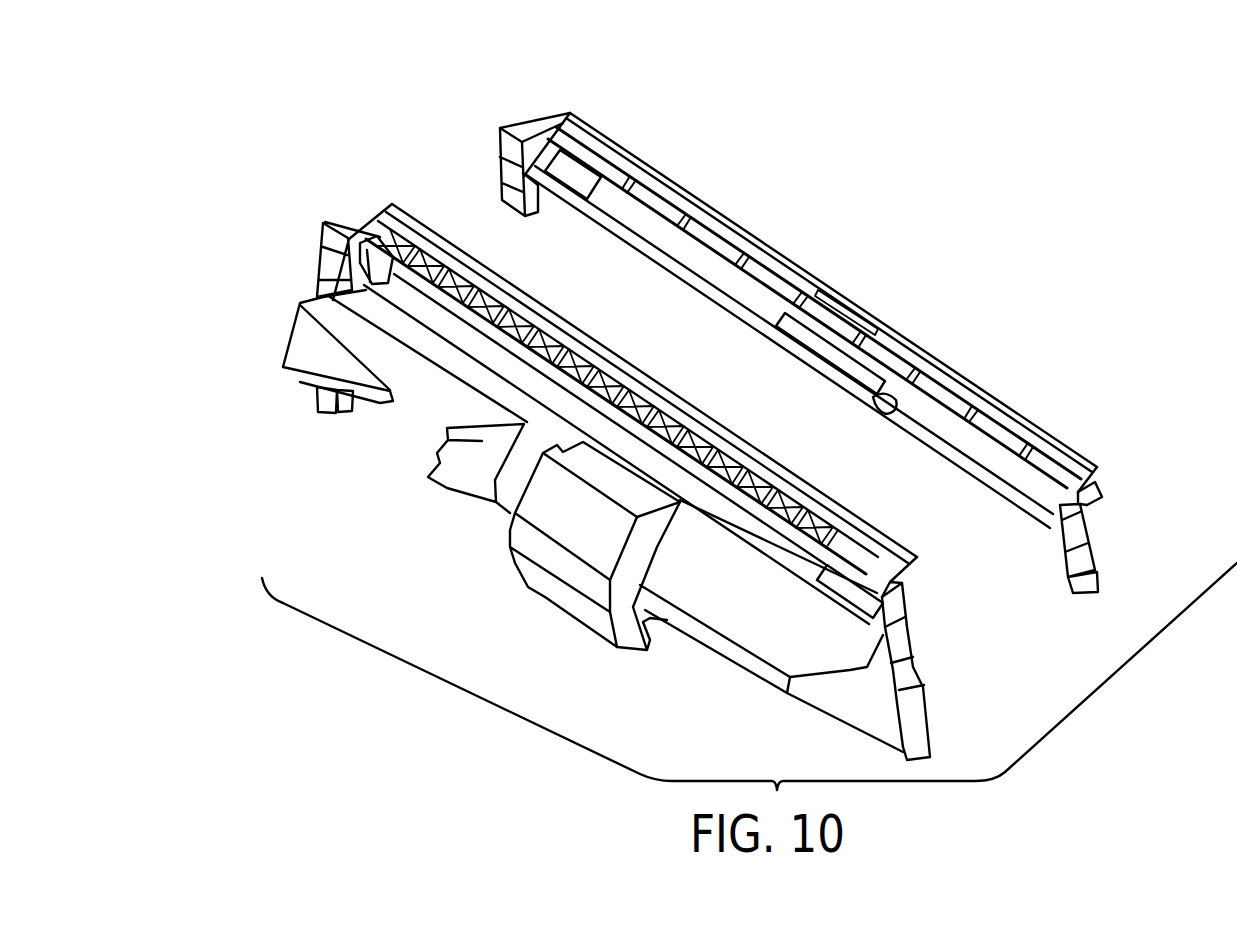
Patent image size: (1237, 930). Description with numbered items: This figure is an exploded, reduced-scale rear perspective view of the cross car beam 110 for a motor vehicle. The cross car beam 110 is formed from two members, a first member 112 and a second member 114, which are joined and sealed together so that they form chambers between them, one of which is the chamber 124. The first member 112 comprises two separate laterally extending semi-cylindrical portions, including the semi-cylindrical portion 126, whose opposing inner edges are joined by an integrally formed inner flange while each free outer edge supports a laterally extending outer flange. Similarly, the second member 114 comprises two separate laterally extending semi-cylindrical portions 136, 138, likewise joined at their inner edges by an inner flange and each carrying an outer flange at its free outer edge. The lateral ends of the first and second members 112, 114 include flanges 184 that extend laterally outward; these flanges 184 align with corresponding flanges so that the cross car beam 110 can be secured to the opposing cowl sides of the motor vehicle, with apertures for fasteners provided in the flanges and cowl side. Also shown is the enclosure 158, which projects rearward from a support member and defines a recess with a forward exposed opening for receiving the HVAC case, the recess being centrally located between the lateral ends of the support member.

The cross car beam 110 is at (1030, 175).
The first member 112 is at (490, 84).
The second member 114 is at (290, 220).
The chamber 124 is at (1100, 473).
The semi-cylindrical portion 126 is at (1092, 488).
The semi-cylindrical portion 136 is at (360, 250).
The semi-cylindrical portion 138 is at (430, 306).
The enclosure 158 is at (510, 546).
The flange 184 is at (500, 138).